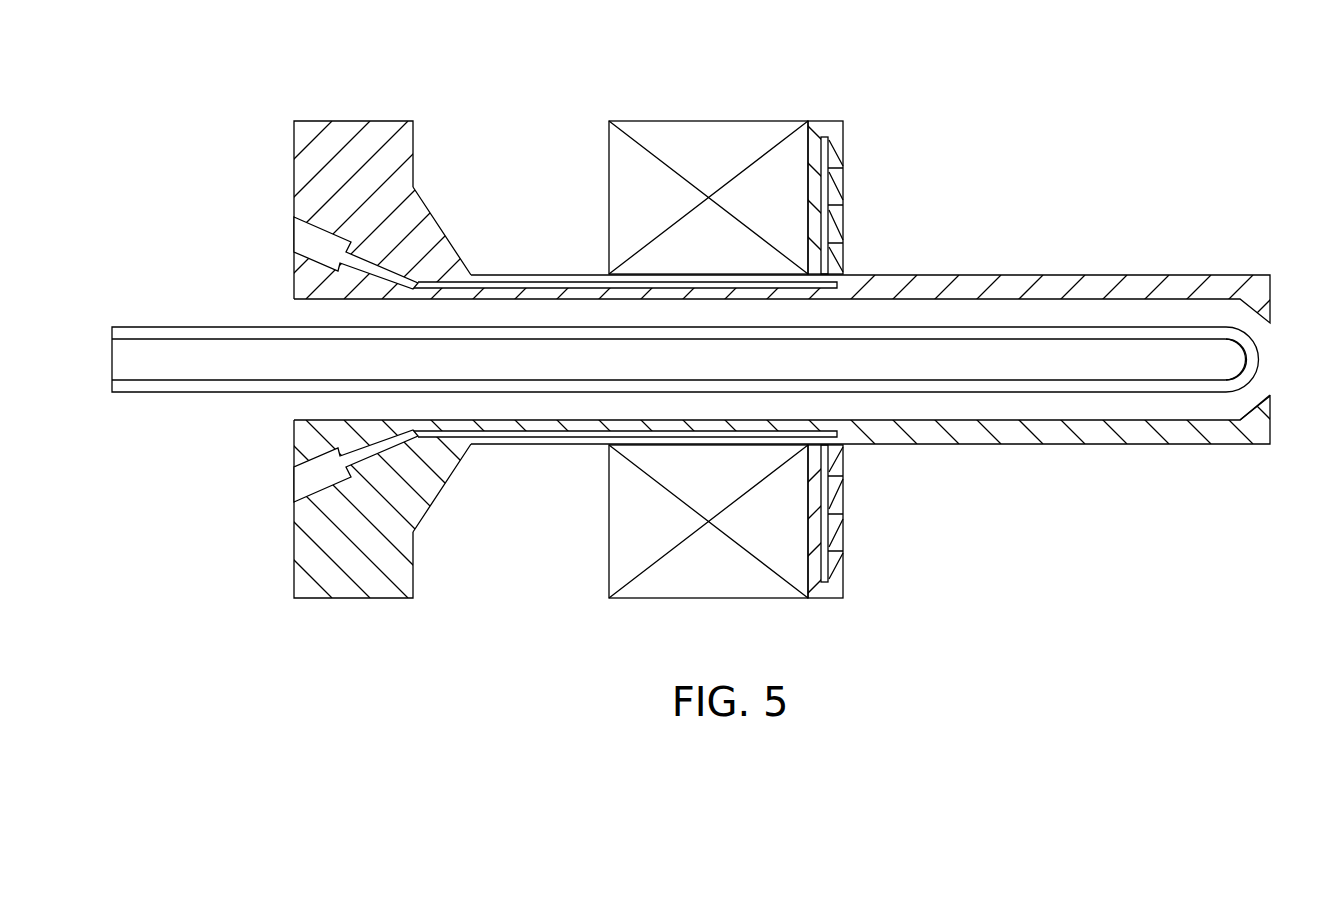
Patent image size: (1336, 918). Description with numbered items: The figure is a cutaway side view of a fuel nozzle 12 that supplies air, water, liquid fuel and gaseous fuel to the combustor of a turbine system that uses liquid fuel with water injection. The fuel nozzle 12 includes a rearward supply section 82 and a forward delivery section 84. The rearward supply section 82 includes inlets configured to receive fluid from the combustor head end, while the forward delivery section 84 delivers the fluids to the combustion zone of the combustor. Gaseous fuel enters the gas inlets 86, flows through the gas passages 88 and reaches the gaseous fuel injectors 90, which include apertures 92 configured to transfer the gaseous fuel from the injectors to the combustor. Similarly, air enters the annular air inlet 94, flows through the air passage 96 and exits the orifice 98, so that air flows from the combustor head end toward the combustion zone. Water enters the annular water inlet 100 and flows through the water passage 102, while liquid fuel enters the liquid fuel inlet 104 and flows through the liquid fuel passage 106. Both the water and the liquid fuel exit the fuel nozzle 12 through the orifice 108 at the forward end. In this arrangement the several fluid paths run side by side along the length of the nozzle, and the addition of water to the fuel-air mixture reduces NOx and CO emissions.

The fuel nozzle 12 is at (1015, 60).
The rearward supply section 82 is at (353, 98).
The forward delivery section 84 is at (985, 492).
The gas inlets 86 is at (278, 228).
The gas passages 88 is at (538, 282).
The gaseous fuel injectors 90 is at (826, 128).
The apertures 92 is at (838, 240).
The annular air inlet 94 is at (268, 407).
The air passage 96 is at (1095, 405).
The orifice 98 is at (1255, 392).
The annular water inlet 100 is at (108, 385).
The water passage 102 is at (1180, 330).
The liquid fuel inlet 104 is at (110, 357).
The liquid fuel passage 106 is at (1075, 357).
The orifice 108 is at (1245, 358).